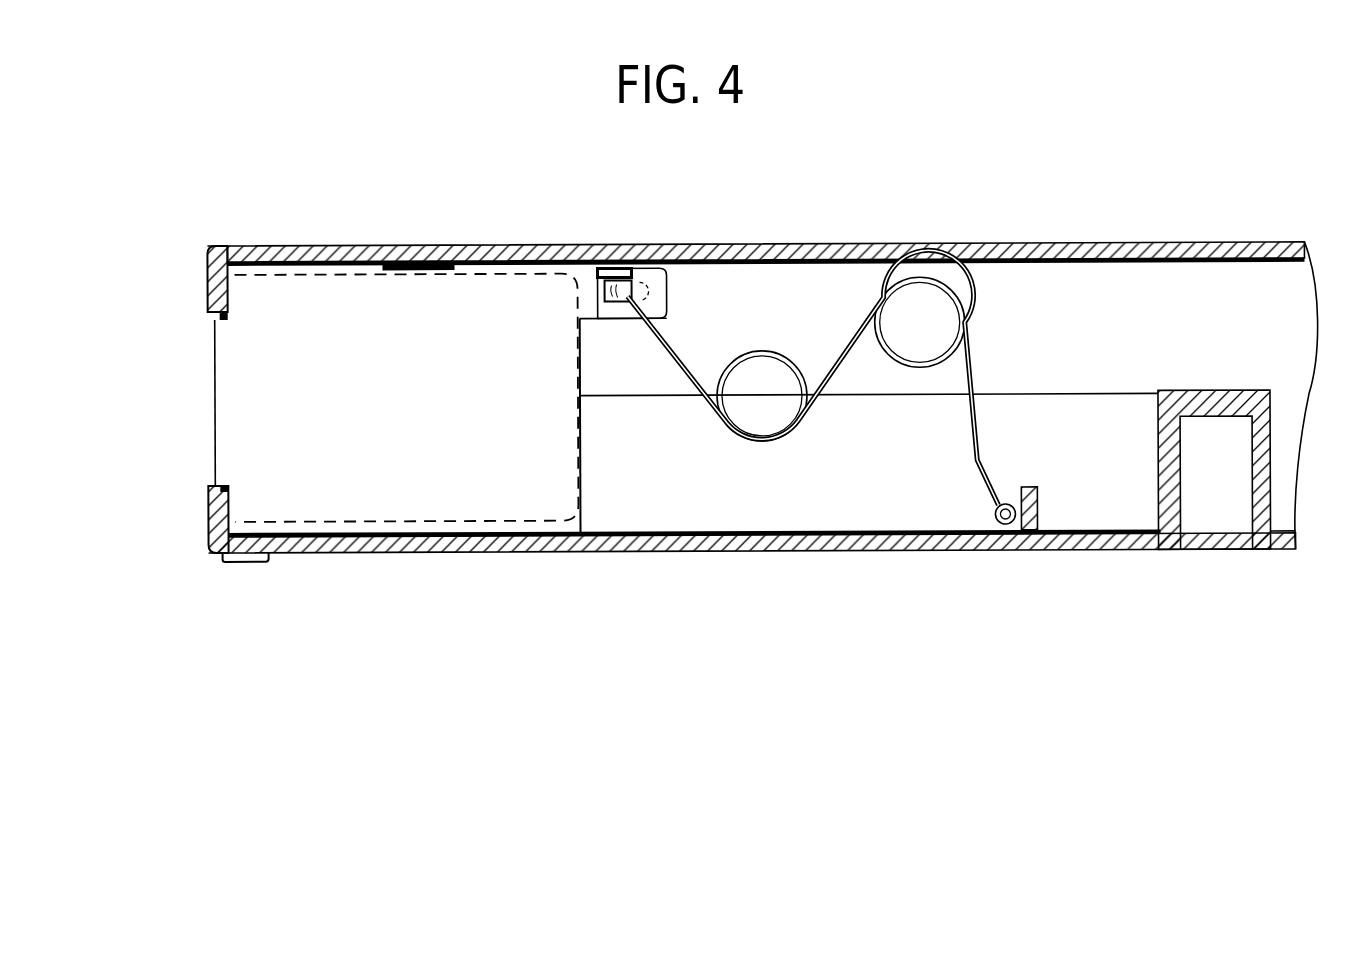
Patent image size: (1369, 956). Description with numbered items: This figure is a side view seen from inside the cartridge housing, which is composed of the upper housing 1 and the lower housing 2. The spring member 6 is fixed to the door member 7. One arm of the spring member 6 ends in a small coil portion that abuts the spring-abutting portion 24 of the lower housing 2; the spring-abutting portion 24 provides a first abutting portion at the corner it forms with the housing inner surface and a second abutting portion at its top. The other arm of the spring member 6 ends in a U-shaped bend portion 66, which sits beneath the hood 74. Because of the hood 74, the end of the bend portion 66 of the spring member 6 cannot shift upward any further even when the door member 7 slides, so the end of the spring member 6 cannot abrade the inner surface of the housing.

The upper housing 1 is at (338, 247).
The lower housing 2 is at (338, 552).
The door member 7 is at (243, 405).
The hood 74 is at (622, 248).
The U-shaped bend portion 66 is at (663, 293).
The spring member 6 is at (857, 330).
The spring-abutting portion 24 is at (1037, 507).